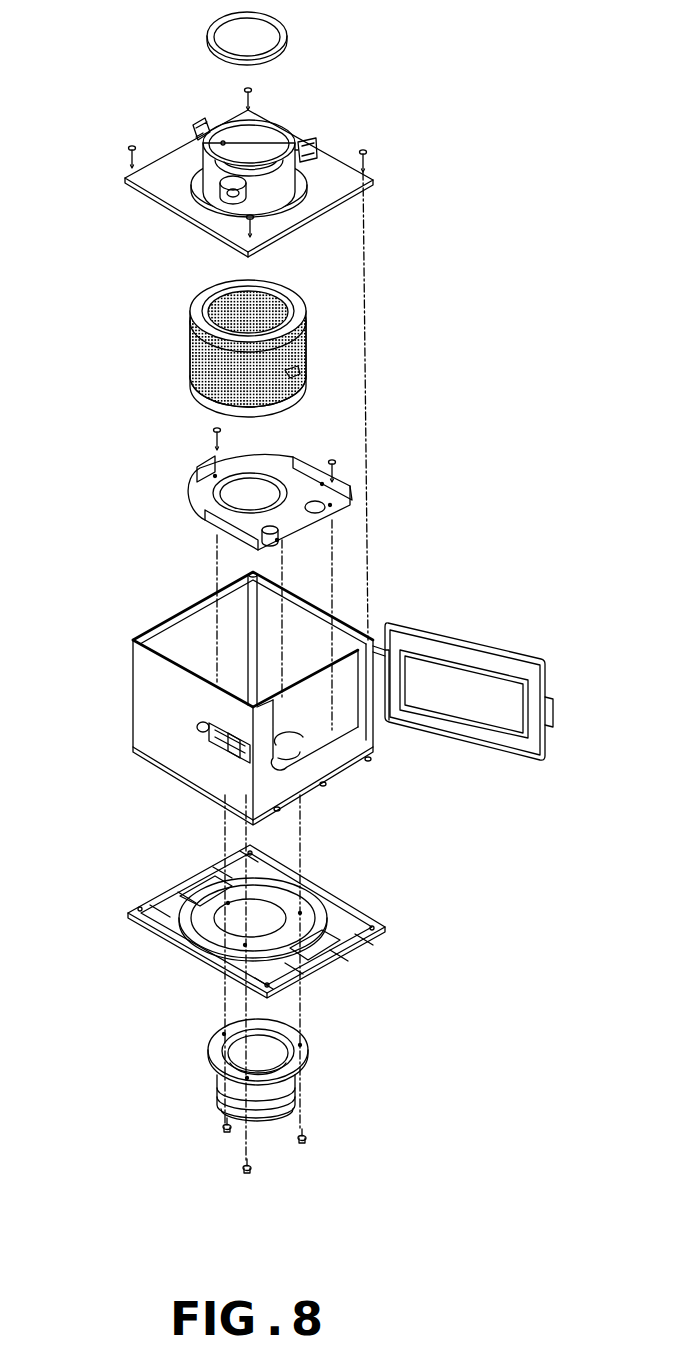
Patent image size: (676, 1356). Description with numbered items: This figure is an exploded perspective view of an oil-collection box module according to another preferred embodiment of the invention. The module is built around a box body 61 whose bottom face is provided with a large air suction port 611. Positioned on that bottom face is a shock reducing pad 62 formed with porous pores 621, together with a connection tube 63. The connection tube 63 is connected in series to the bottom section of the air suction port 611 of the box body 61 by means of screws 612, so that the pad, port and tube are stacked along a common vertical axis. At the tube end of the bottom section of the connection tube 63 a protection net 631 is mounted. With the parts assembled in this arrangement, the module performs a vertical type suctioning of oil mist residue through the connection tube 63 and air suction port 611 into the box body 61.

The box body 61 is at (163, 715).
The air suction port 611 is at (290, 737).
The screws 612 is at (306, 1136).
The shock reducing pad 62 is at (237, 921).
The porous pores 621 is at (230, 920).
The connection tube 63 is at (245, 1116).
The protection net 631 is at (262, 1113).